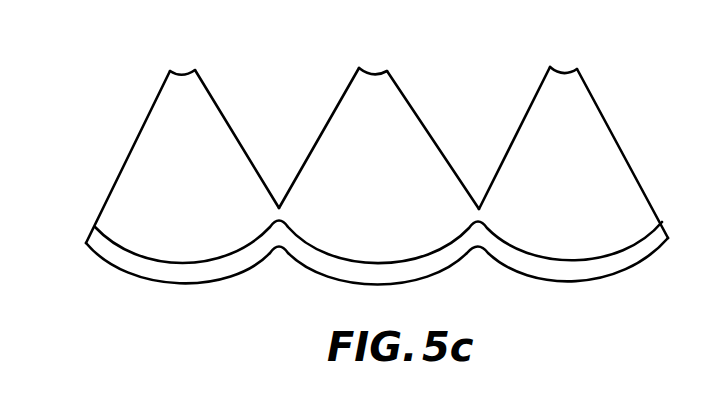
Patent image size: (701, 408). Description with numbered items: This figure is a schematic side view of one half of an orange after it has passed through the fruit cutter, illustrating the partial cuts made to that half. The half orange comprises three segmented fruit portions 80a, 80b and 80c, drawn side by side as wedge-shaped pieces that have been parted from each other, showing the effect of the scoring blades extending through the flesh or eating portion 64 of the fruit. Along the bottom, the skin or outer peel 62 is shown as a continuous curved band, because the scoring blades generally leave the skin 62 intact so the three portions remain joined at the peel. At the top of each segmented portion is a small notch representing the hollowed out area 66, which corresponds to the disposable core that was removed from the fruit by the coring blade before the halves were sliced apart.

The skin or outer peel 62 is at (218, 267).
The flesh or eating portion 64 is at (114, 202).
The hollowed out area 66 is at (181, 72).
The segmented fruit portion 80a is at (207, 194).
The segmented fruit portion 80b is at (412, 190).
The segmented fruit portion 80c is at (572, 175).